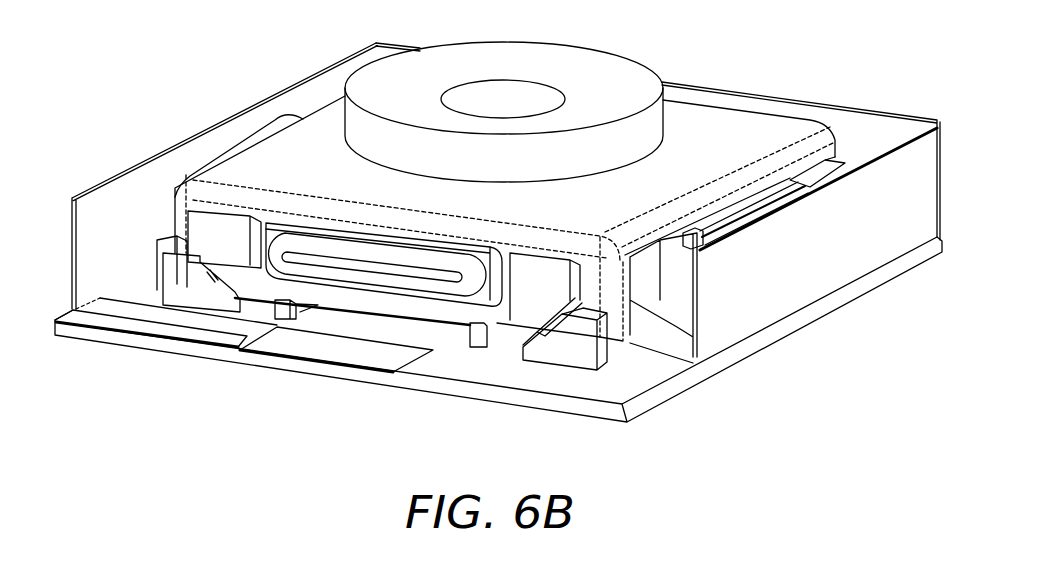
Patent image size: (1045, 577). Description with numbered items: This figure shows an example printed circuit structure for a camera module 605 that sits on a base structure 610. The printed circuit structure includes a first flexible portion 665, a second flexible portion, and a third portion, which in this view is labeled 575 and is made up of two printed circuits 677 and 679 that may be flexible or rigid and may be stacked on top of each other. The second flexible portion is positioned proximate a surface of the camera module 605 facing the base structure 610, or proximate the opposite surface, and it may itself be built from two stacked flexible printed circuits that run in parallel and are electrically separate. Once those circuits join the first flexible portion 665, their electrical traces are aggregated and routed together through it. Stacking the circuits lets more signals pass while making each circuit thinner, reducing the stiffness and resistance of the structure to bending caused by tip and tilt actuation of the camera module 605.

The first flexible portion 665 is at (290, 100).
The camera module 605 is at (743, 133).
The base structure 610 is at (665, 392).
The printed circuit 677 is at (127, 333).
The printed circuit 679 is at (336, 371).
The third portion 575 is at (239, 393).